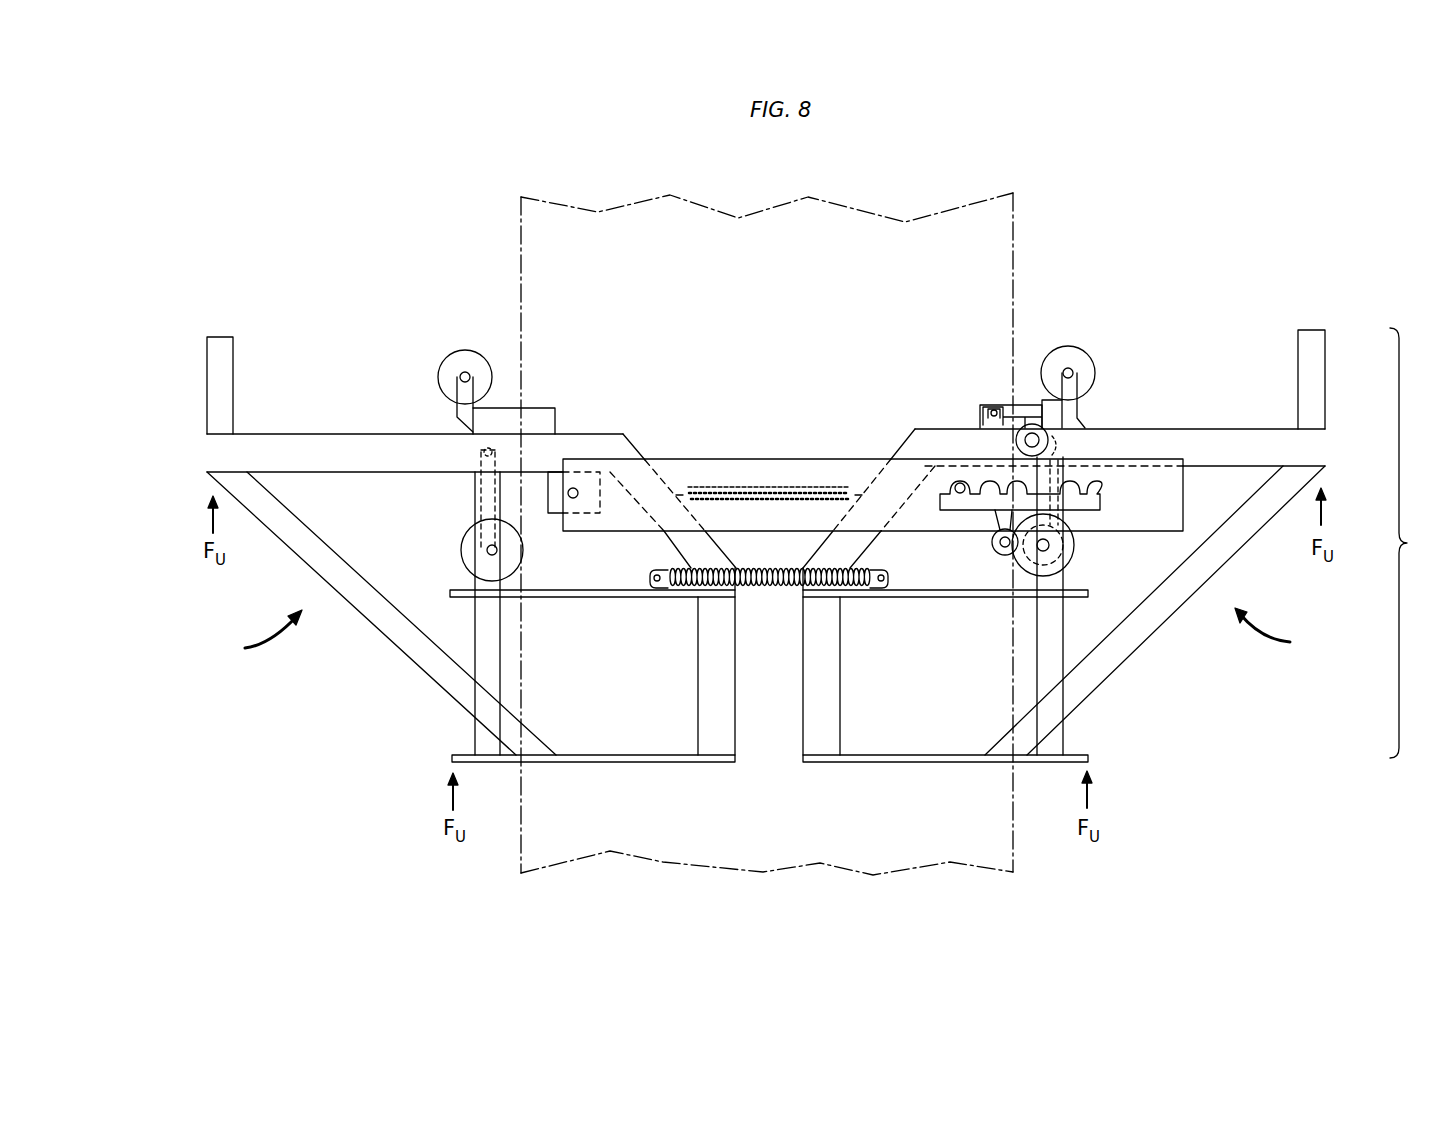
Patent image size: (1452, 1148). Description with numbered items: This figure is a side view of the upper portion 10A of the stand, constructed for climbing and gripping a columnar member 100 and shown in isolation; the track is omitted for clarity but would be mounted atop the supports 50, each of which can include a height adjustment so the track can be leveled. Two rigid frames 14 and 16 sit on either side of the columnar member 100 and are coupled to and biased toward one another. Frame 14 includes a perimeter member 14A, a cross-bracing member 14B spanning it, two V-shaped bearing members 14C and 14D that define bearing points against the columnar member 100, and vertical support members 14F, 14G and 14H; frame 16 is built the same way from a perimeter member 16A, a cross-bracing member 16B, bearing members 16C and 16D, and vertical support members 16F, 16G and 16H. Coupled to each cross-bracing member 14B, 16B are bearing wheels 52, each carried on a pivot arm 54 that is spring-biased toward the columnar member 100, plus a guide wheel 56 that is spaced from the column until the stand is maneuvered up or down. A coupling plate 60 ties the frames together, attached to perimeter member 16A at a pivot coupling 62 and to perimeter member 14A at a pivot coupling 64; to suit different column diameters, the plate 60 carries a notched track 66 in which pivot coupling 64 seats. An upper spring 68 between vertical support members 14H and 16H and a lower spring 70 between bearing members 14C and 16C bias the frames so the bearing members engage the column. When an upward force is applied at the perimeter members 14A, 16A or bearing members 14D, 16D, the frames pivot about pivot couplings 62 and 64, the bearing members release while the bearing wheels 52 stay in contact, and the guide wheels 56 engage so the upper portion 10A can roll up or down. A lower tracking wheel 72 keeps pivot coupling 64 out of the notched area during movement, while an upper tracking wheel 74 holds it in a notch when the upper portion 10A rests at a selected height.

The upper portion 10A is at (1421, 543).
The columnar member 100 is at (1017, 226).
The rigid frame 14 is at (1281, 633).
The perimeter member 14A is at (1240, 429).
The cross-bracing member 14B is at (1048, 415).
The V-shaped bearing member 14C is at (937, 597).
The V-shaped bearing member 14D is at (912, 762).
The vertical support member 14F is at (1138, 650).
The vertical support member 14G is at (1063, 622).
The vertical support member 14H is at (840, 688).
The rigid frame 16 is at (262, 637).
The perimeter member 16A is at (290, 434).
The cross-bracing member 16B is at (482, 410).
The V-shaped bearing member 16C is at (596, 597).
The V-shaped bearing member 16D is at (625, 762).
The vertical support member 16F is at (398, 648).
The vertical support member 16G is at (475, 622).
The vertical support member 16H is at (697, 685).
The support 50 is at (207, 380).
The bearing wheel 52 is at (462, 552).
The pivot arm 54 is at (478, 503).
The guide wheel 56 is at (442, 362).
The coupling plate 60 is at (766, 458).
The pivot coupling 62 is at (575, 488).
The pivot coupling 64 is at (960, 484).
The notched track 66 is at (1102, 505).
The upper spring 68 is at (717, 485).
The lower spring 70 is at (764, 587).
The lower tracking wheel 72 is at (996, 555).
The upper tracking wheel 74 is at (1050, 438).